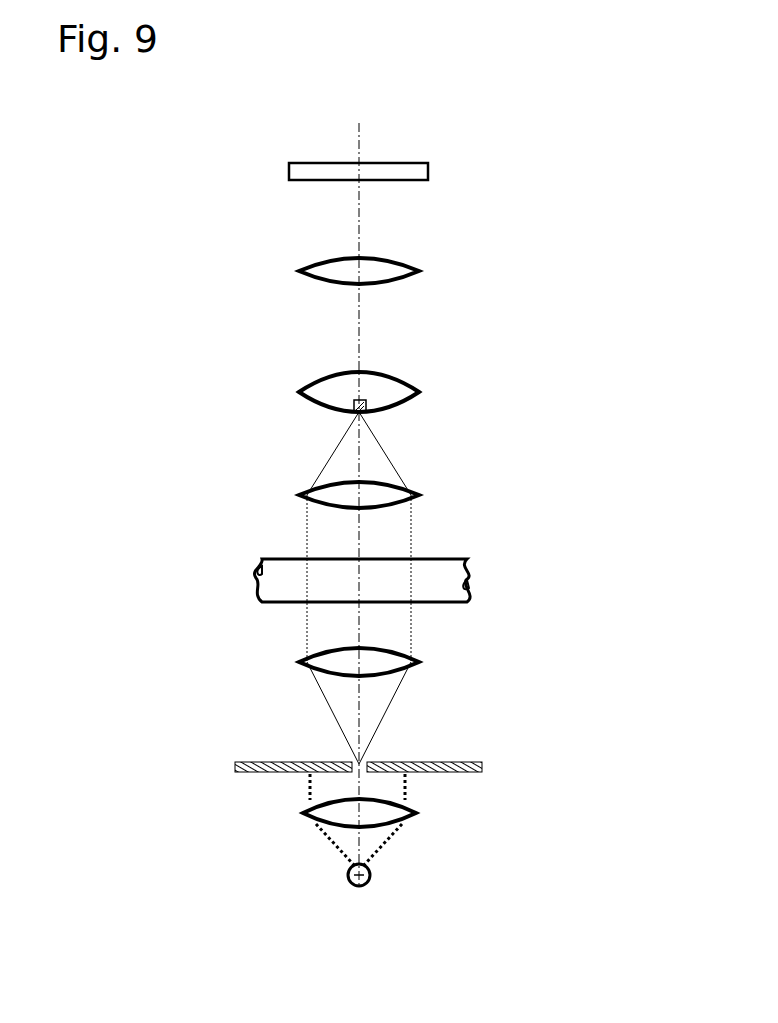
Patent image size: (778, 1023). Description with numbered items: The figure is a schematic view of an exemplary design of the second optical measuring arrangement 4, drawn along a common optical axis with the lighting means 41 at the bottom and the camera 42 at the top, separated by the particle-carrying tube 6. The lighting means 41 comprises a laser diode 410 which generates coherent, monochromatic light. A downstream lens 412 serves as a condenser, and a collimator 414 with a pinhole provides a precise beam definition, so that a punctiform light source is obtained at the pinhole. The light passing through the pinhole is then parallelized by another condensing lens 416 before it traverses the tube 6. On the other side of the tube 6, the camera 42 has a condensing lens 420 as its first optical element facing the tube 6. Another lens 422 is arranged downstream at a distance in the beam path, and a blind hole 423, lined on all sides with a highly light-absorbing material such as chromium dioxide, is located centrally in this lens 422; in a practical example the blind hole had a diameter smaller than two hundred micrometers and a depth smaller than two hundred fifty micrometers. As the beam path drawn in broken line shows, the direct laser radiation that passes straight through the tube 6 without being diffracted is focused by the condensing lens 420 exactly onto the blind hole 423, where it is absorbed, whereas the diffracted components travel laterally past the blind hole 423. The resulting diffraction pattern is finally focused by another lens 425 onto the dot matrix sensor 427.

The second optical measuring arrangement 4 is at (590, 192).
The particle-carrying tube 6 is at (452, 559).
The lighting means 41 is at (568, 729).
The camera 42 is at (568, 349).
The laser diode 410 is at (372, 870).
The lens 412 is at (302, 814).
The collimator 414 is at (235, 766).
The condensing lens 416 is at (297, 662).
The condensing lens 420 is at (297, 495).
The lens 422 is at (297, 392).
The blind hole 423 is at (368, 411).
The lens 425 is at (297, 271).
The dot matrix sensor 427 is at (287, 172).